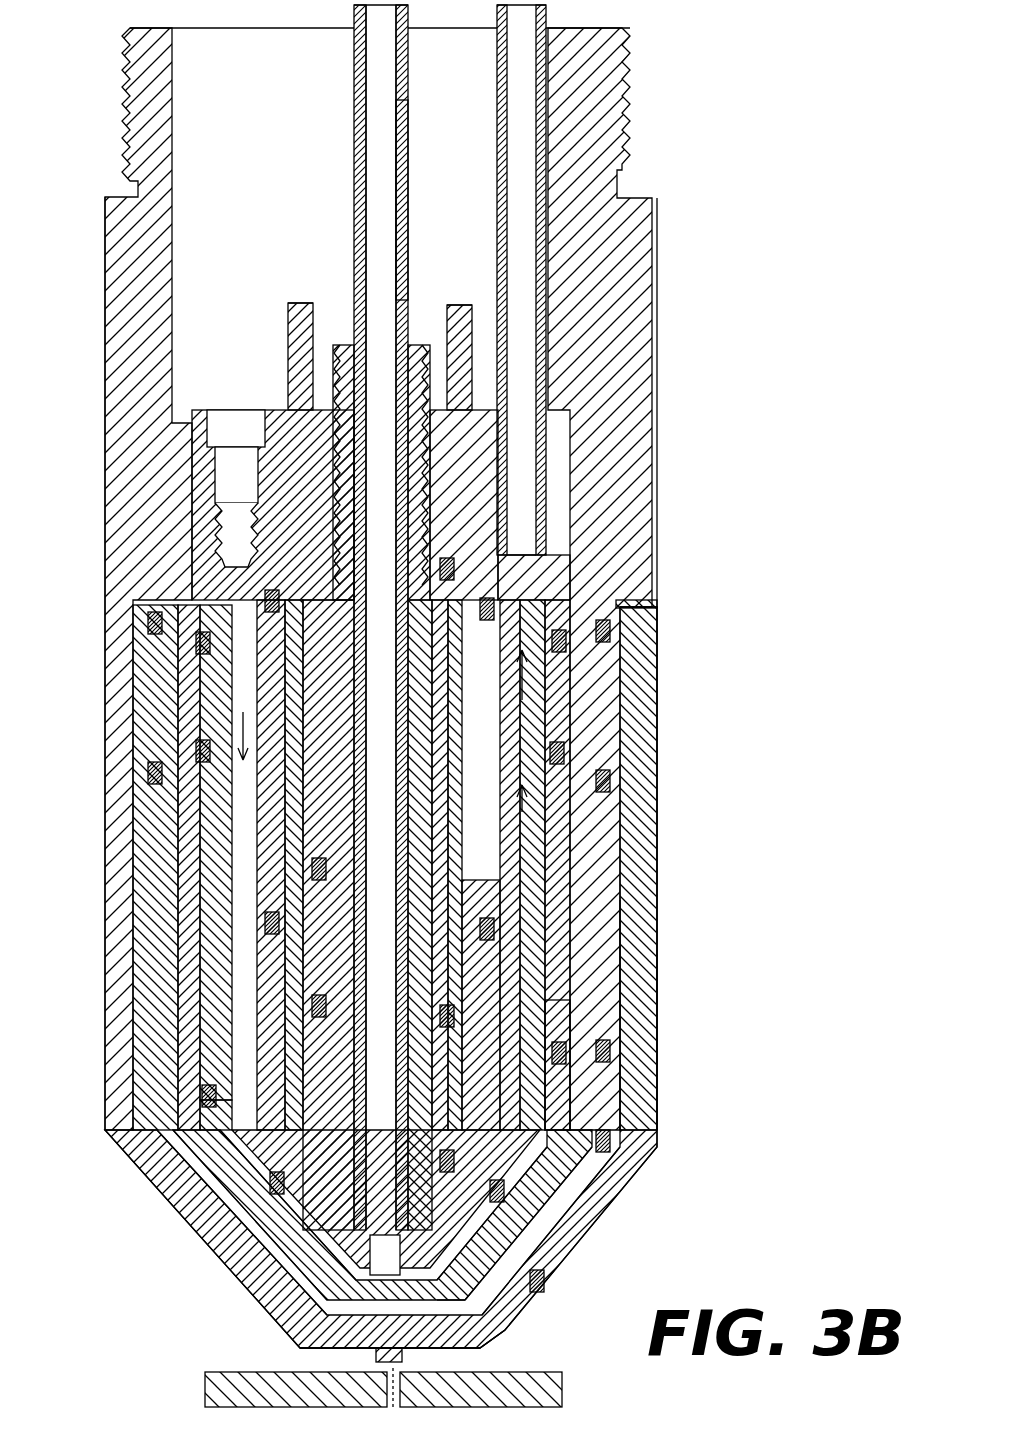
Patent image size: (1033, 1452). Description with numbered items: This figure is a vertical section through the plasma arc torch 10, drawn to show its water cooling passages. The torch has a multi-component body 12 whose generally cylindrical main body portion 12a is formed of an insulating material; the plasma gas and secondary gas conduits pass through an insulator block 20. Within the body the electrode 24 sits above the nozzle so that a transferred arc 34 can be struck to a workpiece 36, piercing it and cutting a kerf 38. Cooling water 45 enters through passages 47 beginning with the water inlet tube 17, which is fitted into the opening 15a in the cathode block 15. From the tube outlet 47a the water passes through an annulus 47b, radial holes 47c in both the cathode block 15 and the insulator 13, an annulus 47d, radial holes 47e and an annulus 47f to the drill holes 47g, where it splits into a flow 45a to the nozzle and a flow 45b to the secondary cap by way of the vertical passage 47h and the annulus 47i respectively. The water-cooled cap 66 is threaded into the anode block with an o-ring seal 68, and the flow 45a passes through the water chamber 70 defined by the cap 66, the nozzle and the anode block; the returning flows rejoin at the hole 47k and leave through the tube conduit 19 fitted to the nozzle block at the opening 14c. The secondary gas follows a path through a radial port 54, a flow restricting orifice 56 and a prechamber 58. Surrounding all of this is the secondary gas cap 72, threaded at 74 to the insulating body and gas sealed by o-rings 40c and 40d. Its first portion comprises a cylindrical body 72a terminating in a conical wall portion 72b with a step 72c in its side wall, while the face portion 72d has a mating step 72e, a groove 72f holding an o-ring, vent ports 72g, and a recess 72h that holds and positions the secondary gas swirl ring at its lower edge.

The plasma arc torch 10 is at (675, 97).
The multi-component body 12 is at (105, 540).
The main body portion 12a is at (655, 378).
The insulator 13 is at (240, 597).
The opening 14c is at (585, 525).
The cathode block 15 is at (345, 805).
The opening 15a is at (345, 320).
The water inlet tube 17 is at (400, 92).
The tube conduit 19 is at (540, 16).
The insulator block 20 is at (452, 305).
The electrode 24 is at (386, 1246).
The transferred arc 34 is at (385, 1365).
The workpiece 36 is at (560, 1375).
The kerf 38 is at (390, 1408).
The o-ring 40c is at (657, 618).
The o-ring 40d is at (657, 788).
The cooling water 45 is at (400, 16).
The water flow to nozzle 45a is at (180, 752).
The water flow to secondary cap 45b is at (215, 662).
The passages 47 is at (400, 148).
The tube outlet 47a is at (300, 1275).
The annulus 47b is at (562, 880).
The radial holes 47c is at (345, 828).
The annulus 47d is at (190, 728).
The radial holes 47e is at (200, 620).
The annulus 47f is at (622, 735).
The drill holes 47g is at (190, 690).
The vertical passage 47h is at (240, 1145).
The annulus 47i is at (215, 648).
The hole 47k is at (615, 672).
The radial port 54 is at (650, 985).
The flow restricting orifice 56 is at (190, 995).
The prechamber 58 is at (215, 1232).
The water-cooled cap 66 is at (650, 1160).
The o-ring seal 68 is at (640, 1060).
The water chamber 70 is at (570, 1218).
The secondary gas cap 72 is at (657, 965).
The cylindrical body 72a is at (650, 1035).
The conical wall portion 72b is at (620, 1240).
The step 72c is at (560, 1300).
The face portion 72d is at (535, 1348).
The step 72e is at (575, 1280).
The groove 72f is at (548, 1330).
The vent ports 72g is at (285, 1325).
The recess 72h is at (480, 1352).
The threads 74 is at (657, 845).